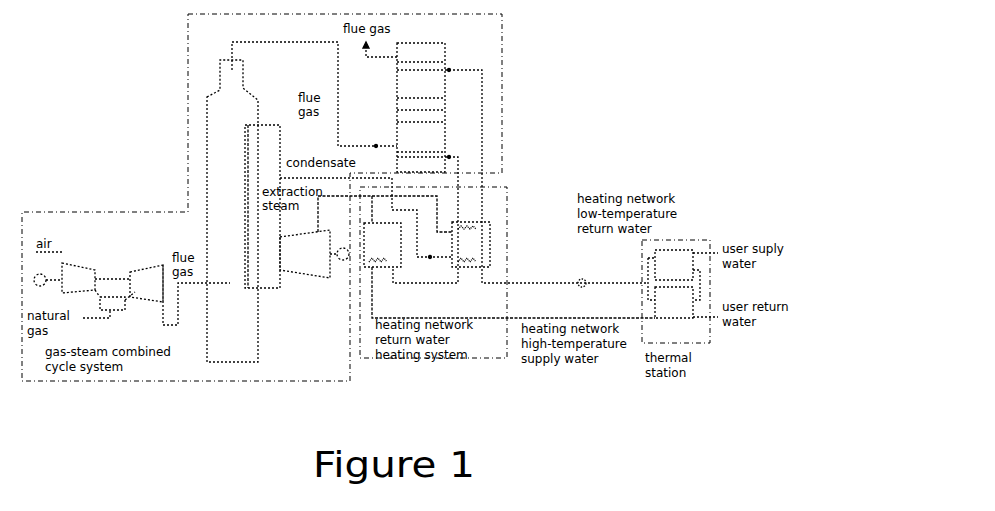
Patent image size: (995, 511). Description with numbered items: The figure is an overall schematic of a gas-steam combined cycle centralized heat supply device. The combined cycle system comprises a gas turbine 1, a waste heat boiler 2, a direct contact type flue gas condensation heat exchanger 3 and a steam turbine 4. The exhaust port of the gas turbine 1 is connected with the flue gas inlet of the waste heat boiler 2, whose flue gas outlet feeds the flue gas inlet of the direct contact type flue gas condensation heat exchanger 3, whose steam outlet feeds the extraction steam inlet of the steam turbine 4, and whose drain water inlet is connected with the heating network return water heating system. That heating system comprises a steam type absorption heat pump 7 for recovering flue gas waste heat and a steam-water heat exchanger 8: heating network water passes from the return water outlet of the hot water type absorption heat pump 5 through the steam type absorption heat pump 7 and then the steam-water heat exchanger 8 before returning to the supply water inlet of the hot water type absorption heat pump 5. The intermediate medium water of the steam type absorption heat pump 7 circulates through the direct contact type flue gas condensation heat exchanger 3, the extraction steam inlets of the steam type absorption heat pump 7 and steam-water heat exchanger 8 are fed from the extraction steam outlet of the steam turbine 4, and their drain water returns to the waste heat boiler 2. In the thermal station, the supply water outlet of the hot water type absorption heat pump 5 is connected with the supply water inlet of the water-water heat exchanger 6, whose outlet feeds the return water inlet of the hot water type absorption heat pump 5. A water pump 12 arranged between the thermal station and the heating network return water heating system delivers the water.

The gas turbine 1 is at (121, 277).
The waste heat boiler 2 is at (232, 232).
The direct contact type flue gas condensation heat exchanger 3 is at (505, 162).
The steam turbine 4 is at (314, 254).
The hot water type absorption heat pump 5 is at (674, 304).
The water-water heat exchanger 6 is at (674, 266).
The steam type absorption heat pump for recovering flue gas waste heat 7 is at (471, 244).
The steam-water heat exchanger 8 is at (382, 245).
The water pump 12 is at (580, 279).